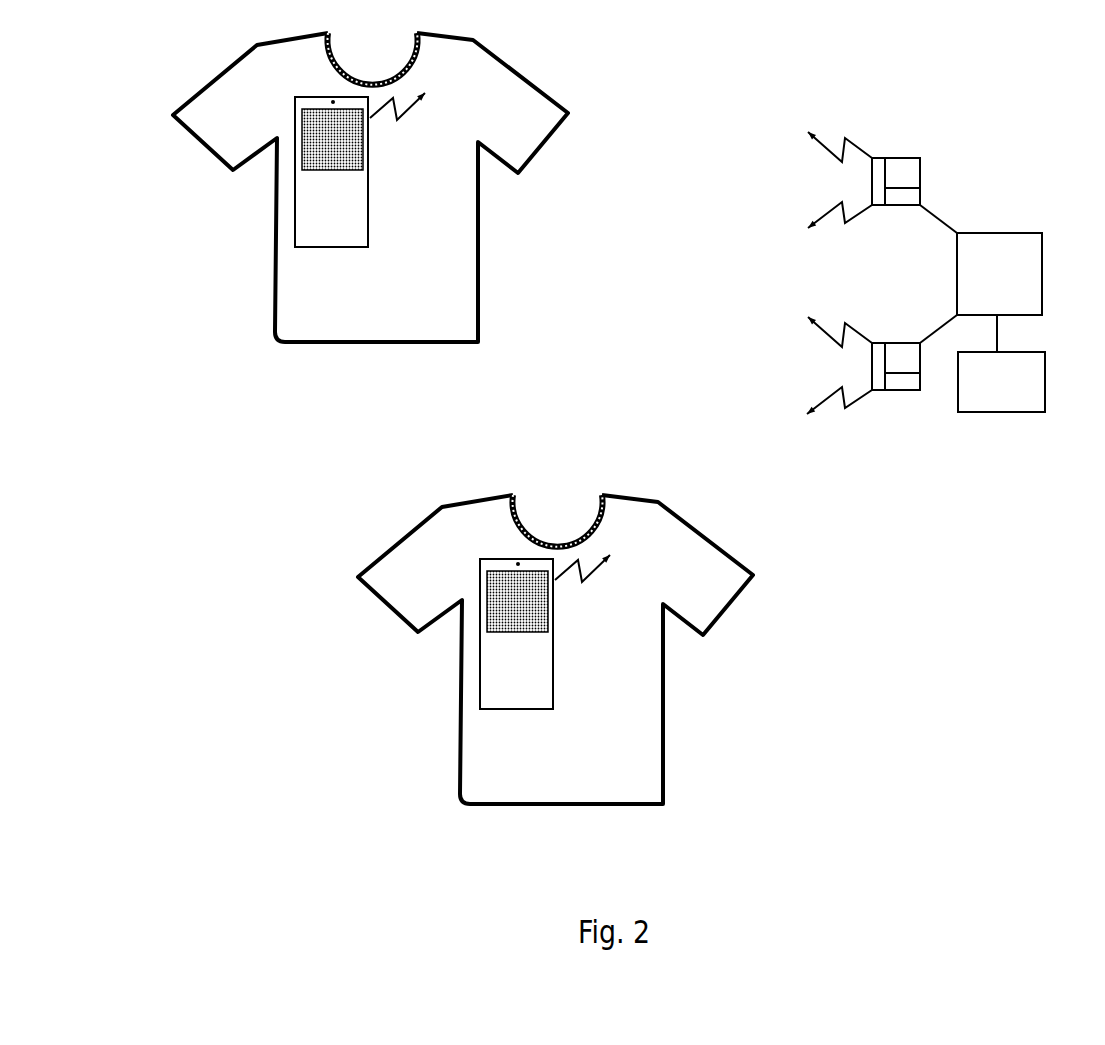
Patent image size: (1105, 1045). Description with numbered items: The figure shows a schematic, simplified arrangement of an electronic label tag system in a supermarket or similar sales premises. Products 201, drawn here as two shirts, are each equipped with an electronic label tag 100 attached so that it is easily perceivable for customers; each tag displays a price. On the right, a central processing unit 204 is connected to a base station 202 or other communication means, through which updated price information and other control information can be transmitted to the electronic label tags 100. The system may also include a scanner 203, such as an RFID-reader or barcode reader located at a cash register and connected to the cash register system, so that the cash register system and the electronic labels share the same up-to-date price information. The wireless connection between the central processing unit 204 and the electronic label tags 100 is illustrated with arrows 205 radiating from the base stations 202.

The electronic label tag 100 is at (322, 215).
The product 201 is at (245, 128).
The base station 202 is at (903, 172).
The scanner 203 is at (1025, 392).
The central processing unit 204 is at (1023, 248).
The arrows 205 is at (828, 398).